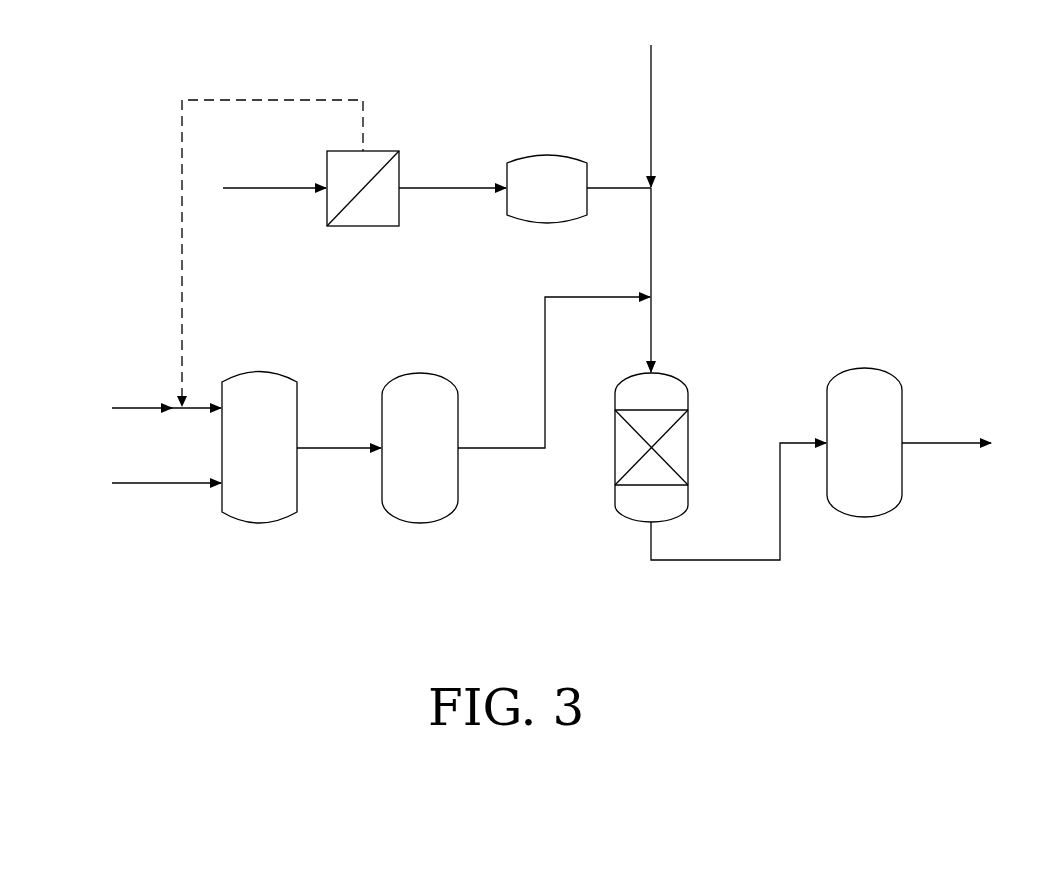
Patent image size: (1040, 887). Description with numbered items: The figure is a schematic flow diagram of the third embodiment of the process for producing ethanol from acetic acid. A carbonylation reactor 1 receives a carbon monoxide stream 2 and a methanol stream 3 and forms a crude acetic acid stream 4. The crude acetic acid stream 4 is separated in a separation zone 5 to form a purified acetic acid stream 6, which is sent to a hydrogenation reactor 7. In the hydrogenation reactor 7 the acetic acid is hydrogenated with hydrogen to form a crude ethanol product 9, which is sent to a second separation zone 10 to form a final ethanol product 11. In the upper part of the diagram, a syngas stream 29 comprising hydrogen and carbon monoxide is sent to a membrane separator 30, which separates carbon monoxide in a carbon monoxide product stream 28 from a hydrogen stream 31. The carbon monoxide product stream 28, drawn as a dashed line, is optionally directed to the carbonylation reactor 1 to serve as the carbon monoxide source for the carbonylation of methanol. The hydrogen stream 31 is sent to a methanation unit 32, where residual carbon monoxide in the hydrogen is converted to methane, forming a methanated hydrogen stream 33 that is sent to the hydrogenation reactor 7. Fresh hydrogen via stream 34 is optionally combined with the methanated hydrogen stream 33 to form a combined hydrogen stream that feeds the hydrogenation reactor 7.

The carbonylation reactor 1 is at (247, 461).
The carbon monoxide stream 2 is at (112, 408).
The methanol stream 3 is at (112, 483).
The crude acetic acid stream 4 is at (330, 450).
The separation zone 5 is at (408, 461).
The purified acetic acid stream 6 is at (500, 450).
The hydrogenation reactor 7 is at (630, 503).
The crude ethanol product 9 is at (686, 562).
The separation zone 10 is at (851, 457).
The final ethanol product 11 is at (943, 445).
The carbon monoxide product stream 28 is at (182, 213).
The syngas stream 29 is at (258, 190).
The membrane separator 30 is at (362, 227).
The hydrogen stream 31 is at (470, 190).
The methanation unit 32 is at (534, 201).
The methanated hydrogen stream 33 is at (652, 240).
The fresh hydrogen stream 34 is at (652, 87).